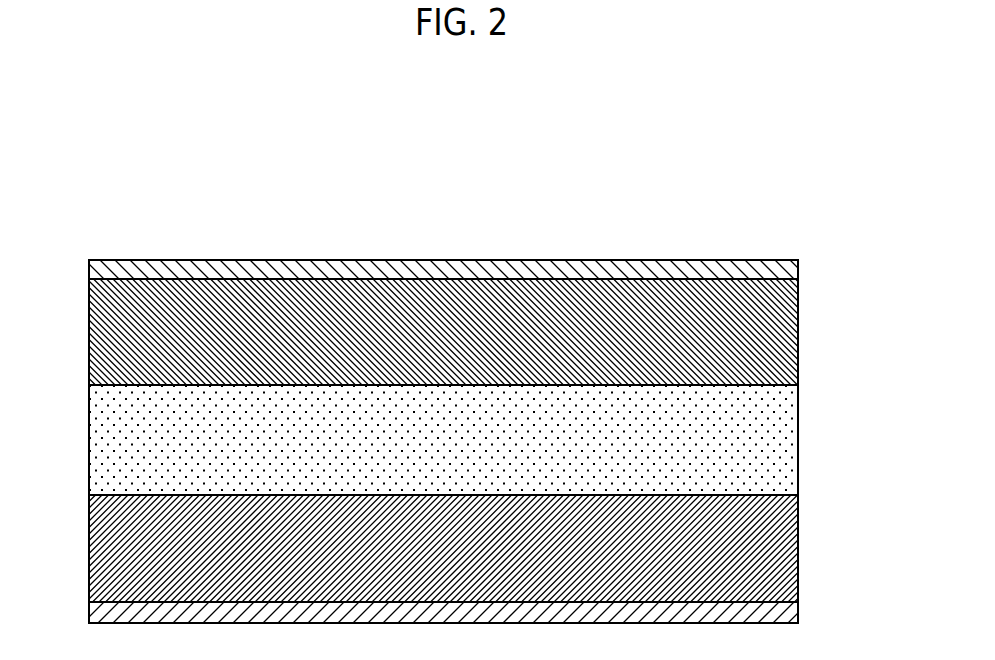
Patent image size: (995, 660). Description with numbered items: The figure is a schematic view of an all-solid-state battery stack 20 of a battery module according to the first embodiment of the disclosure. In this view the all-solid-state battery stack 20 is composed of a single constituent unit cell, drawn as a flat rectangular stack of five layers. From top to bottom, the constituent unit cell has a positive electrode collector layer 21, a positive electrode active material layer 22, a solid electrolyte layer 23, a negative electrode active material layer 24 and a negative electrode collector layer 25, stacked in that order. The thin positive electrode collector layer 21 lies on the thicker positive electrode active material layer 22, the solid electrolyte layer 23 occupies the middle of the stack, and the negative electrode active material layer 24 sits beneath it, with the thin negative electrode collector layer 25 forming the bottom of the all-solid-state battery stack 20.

The all-solid-state battery stack 20 is at (147, 238).
The positive electrode collector layer 21 is at (785, 269).
The positive electrode active material layer 22 is at (783, 331).
The solid electrolyte layer 23 is at (785, 441).
The negative electrode active material layer 24 is at (785, 551).
The negative electrode collector layer 25 is at (785, 610).